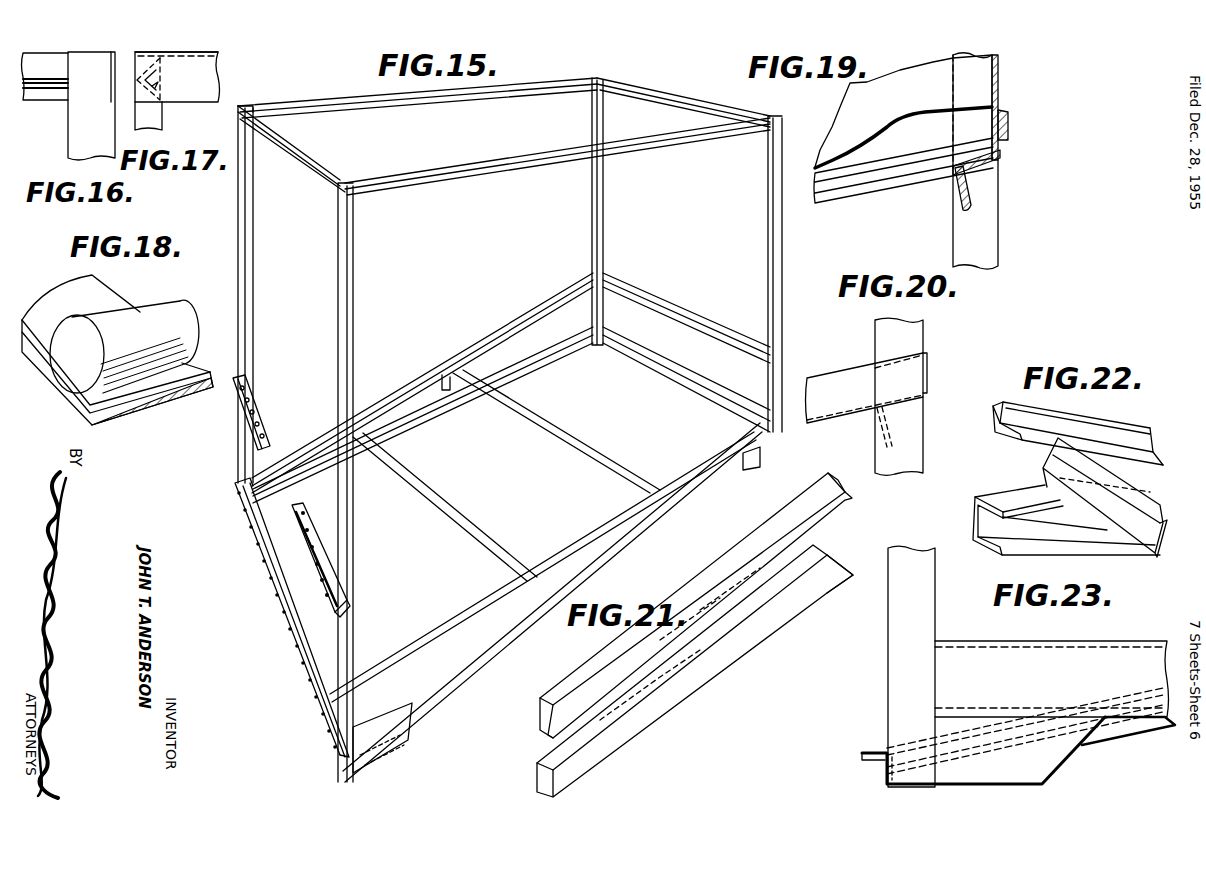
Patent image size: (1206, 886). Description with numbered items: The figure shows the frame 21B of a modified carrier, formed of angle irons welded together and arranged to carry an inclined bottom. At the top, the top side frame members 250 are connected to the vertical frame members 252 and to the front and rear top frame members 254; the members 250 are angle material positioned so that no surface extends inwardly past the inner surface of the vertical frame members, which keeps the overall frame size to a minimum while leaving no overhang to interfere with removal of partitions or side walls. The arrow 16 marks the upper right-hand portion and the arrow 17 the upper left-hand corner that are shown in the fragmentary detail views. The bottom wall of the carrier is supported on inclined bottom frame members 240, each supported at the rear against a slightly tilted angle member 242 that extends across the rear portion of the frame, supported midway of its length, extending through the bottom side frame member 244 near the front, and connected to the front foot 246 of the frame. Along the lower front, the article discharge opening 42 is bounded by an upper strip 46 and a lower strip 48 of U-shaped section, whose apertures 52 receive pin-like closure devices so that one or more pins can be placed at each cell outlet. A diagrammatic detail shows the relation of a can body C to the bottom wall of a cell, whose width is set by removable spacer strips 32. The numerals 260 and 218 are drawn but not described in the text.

In FIG. 16, the front and rear top frame member 254 is at (71, 55).
In FIG. 17, the front and rear top frame member 254 is at (166, 54).
In FIG. 15, the front and rear top frame member 254 is at (315, 159).
In FIG. 16, the top side frame member 250 is at (44, 91).
In FIG. 17, the top side frame member 250 is at (167, 80).
In FIG. 15, the top side frame member 250 is at (493, 166).
In FIG. 17, the vertical frame member 252 is at (155, 119).
In FIG. 15, the vertical frame member 252 is at (351, 340).
In FIG. 18, the spacer strip 32 is at (150, 401).
In FIG. 18, the can body C is at (176, 308).
In FIG. 15, the arrow 16 is at (758, 141).
In FIG. 15, the arrow 17 is at (366, 212).
In FIG. 15, the frame 21B is at (249, 309).
In FIG. 15, the upper strip 46 is at (255, 421).
In FIG. 15, the bottom side frame member 244 is at (417, 417).
In FIG. 21, the bottom side frame member 244 is at (720, 650).
In FIG. 23, the bottom side frame member 244 is at (1063, 657).
In FIG. 15, the tilted angle member 242 is at (700, 326).
In FIG. 19, the tilted angle member 242 is at (970, 192).
In FIG. 20, the tilted angle member 242 is at (880, 429).
In FIG. 15, the inclined bottom frame member 240 is at (545, 570).
In FIG. 19, the inclined bottom frame member 240 is at (875, 173).
In FIG. 20, the inclined bottom frame member 240 is at (842, 380).
In FIG. 21, the inclined bottom frame member 240 is at (766, 544).
In FIG. 22, the inclined bottom frame member 240 is at (998, 411).
In FIG. 23, the inclined bottom frame member 240 is at (1120, 724).
In FIG. 15, the aperture 52 is at (292, 633).
In FIG. 15, the article discharge opening 42 is at (303, 658).
In FIG. 15, the lower strip 48 is at (317, 688).
In FIG. 19, the weld 260 is at (1003, 123).
In FIG. 20, the post 218 is at (901, 396).
In FIG. 23, the post 218 is at (897, 628).
In FIG. 23, the front foot 246 is at (1038, 770).